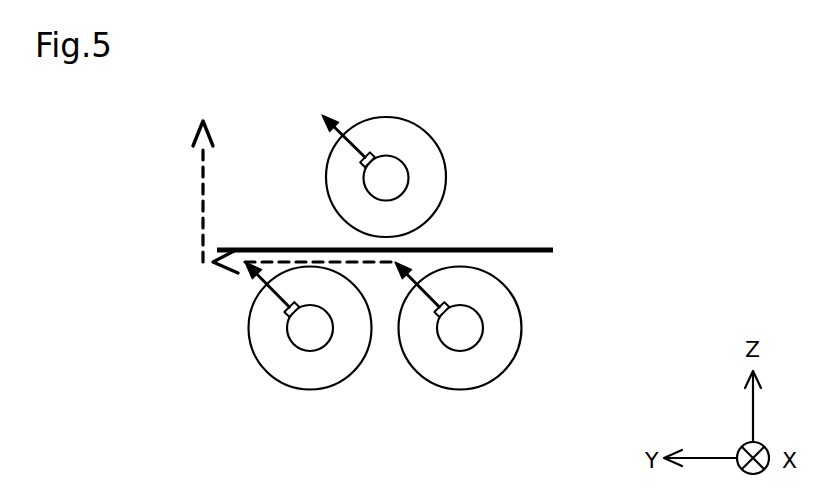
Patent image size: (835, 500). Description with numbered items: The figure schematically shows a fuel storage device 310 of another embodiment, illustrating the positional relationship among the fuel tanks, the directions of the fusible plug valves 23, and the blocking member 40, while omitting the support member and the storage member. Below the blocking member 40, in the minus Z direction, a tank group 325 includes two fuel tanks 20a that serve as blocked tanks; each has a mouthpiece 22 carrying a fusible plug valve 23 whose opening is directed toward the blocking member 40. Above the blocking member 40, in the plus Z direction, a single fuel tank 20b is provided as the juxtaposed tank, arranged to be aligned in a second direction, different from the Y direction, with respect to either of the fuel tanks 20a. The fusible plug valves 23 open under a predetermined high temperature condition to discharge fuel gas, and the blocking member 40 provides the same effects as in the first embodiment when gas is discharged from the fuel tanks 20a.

The fuel storage device 310 is at (556, 137).
The blocking member 40 is at (526, 248).
The fuel tank 20b is at (448, 177).
The fuel tank 20a is at (302, 390).
The mouthpiece 22 is at (397, 181).
The fusible plug valve 23 is at (378, 156).
The tank group 325 is at (576, 251).